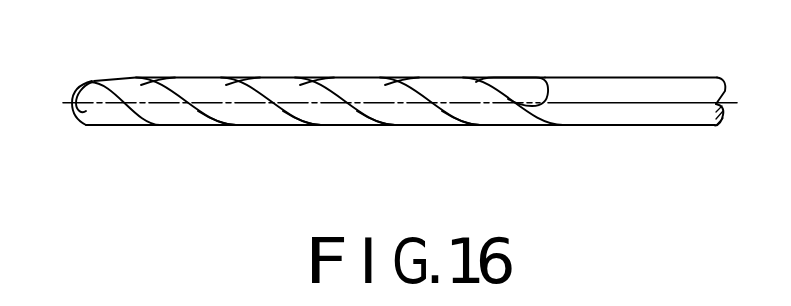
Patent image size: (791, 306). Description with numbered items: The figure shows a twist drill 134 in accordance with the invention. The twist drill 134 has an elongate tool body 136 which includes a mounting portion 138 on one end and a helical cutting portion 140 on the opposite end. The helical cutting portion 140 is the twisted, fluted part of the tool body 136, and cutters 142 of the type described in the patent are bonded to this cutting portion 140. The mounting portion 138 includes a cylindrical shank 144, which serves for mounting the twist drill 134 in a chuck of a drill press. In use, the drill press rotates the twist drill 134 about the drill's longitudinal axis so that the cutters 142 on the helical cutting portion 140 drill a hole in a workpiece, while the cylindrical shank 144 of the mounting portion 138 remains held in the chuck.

The twist drill 134 is at (592, 77).
The elongate tool body 136 is at (536, 127).
The mounting portion 138 is at (664, 78).
The helical cutting portion 140 is at (322, 77).
The cutters 142 is at (76, 98).
The cylindrical shank 144 is at (663, 127).